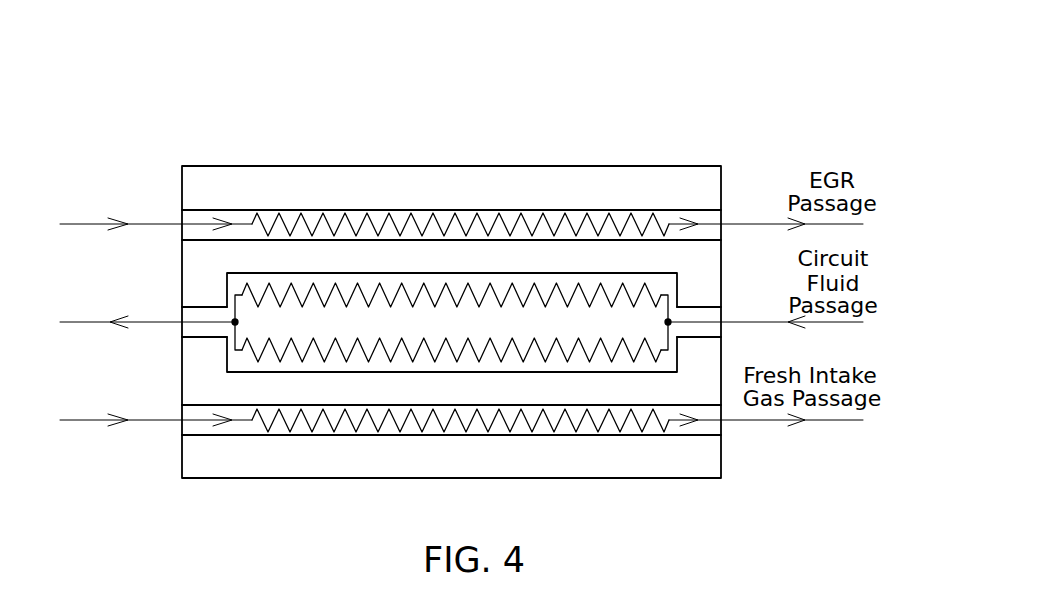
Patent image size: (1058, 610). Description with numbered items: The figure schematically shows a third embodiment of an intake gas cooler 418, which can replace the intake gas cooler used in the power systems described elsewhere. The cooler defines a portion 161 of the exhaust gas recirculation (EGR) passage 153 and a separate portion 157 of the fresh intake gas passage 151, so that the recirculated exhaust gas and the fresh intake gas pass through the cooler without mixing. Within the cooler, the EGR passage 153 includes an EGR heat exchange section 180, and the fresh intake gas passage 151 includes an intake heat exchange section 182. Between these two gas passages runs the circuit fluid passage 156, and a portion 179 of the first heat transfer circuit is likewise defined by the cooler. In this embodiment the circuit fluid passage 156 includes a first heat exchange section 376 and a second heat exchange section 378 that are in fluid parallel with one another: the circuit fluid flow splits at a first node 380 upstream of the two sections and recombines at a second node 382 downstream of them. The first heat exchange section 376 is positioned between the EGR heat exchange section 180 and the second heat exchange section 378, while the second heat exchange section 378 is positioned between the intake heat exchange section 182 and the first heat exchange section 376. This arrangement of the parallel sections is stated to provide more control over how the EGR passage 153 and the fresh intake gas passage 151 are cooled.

The intake gas cooler 418 is at (528, 92).
The exhaust gas recirculation (EGR) passage 153 is at (631, 181).
The fresh intake gas passage 151 is at (349, 452).
The portion of the first circuit 179 is at (194, 320).
The circuit fluid passage 156 is at (713, 289).
The portion of the EGR passage 161 is at (192, 224).
The portion of the fresh intake gas passage 157 is at (195, 421).
The EGR heat exchange section 180 is at (408, 213).
The intake heat exchange section 182 is at (602, 425).
The first heat exchange section 376 is at (470, 290).
The second heat exchange section 378 is at (433, 340).
The first node 380 is at (665, 322).
The second node 382 is at (238, 322).